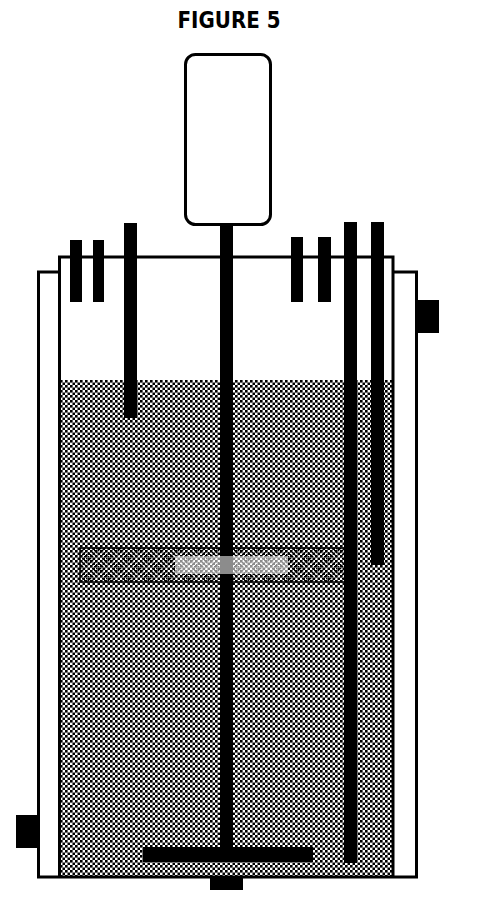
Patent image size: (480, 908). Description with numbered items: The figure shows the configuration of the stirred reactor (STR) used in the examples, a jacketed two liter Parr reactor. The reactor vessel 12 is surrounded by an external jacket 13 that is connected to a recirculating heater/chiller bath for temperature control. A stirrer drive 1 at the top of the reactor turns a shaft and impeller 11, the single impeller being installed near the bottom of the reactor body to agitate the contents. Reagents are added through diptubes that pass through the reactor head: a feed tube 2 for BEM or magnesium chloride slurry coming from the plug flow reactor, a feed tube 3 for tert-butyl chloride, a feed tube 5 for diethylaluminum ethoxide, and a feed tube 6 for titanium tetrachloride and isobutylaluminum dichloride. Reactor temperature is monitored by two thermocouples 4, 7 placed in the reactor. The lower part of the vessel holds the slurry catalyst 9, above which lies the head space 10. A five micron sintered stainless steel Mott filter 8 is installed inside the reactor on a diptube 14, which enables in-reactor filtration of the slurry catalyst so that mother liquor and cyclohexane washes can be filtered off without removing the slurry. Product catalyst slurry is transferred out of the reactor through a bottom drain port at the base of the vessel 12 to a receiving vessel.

The magnetic stirrer 1 is at (228, 140).
The BEM or MgCl2 slurry feed tube from PFR 2 is at (76, 182).
The tBuCl feed tube 3 is at (99, 251).
The thermocouple (left) 4 is at (132, 274).
The Et2AlOEt feed tube 5 is at (293, 246).
The TiCl4 / iBuAlCl2 feed tube 6 is at (317, 245).
The thermocouple (right) 7 is at (351, 497).
The MOTT filter 8 is at (215, 565).
The slurry catalyst 9 is at (226, 628).
The head space 10 is at (227, 319).
The stirrer shaft and impeller 11 is at (228, 557).
The reactor vessel 12 is at (227, 567).
The reactor jacket 13 is at (227, 574).
The dip tube 14 is at (377, 393).